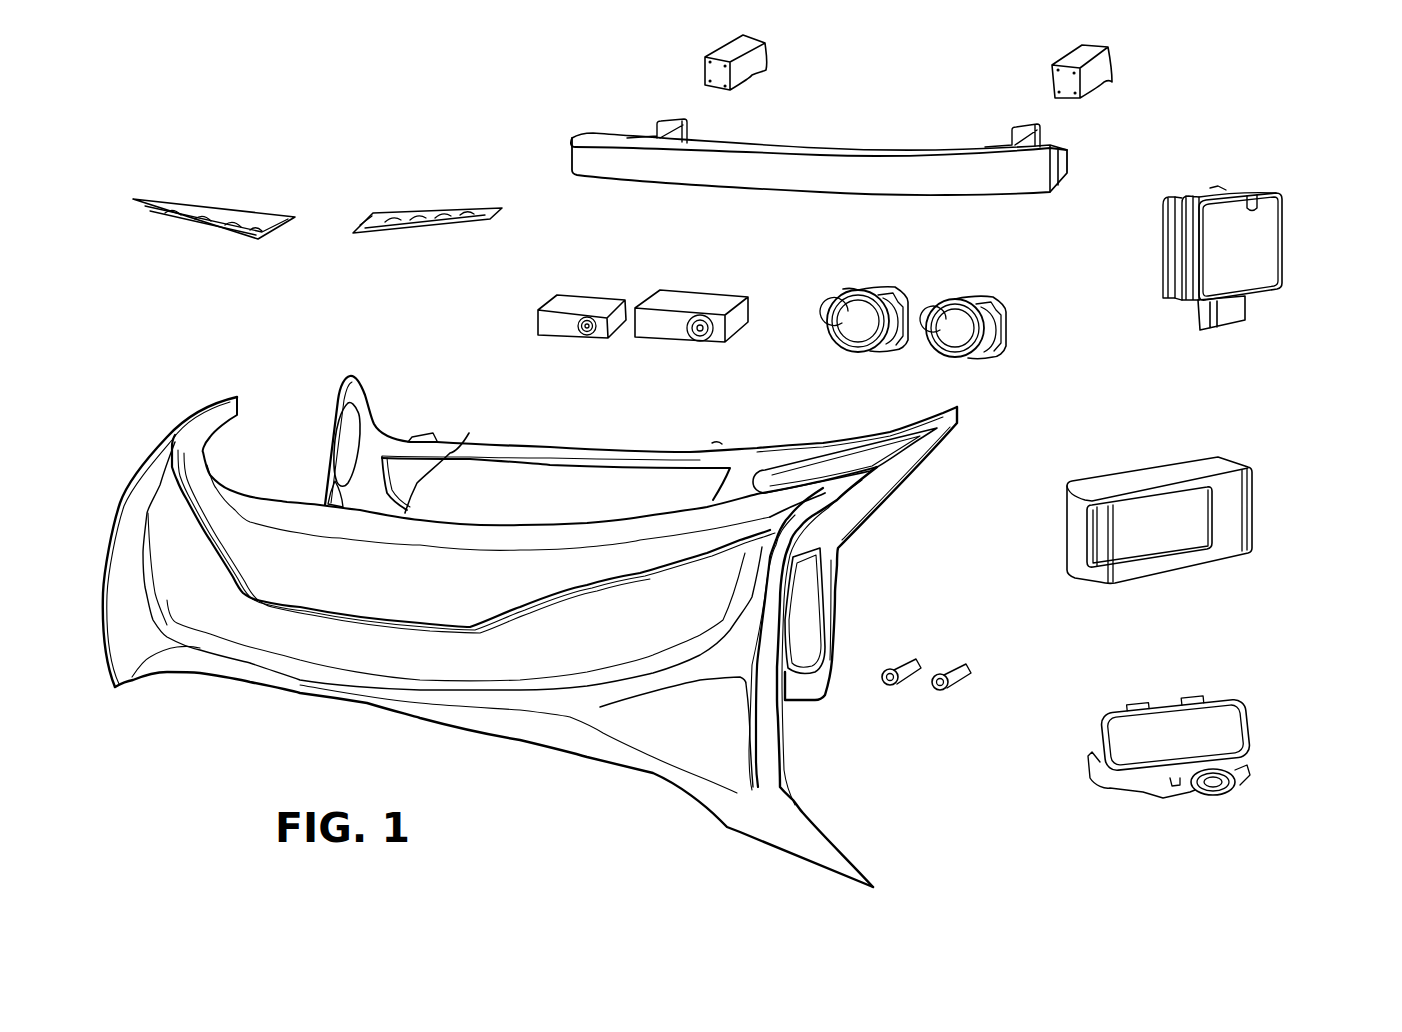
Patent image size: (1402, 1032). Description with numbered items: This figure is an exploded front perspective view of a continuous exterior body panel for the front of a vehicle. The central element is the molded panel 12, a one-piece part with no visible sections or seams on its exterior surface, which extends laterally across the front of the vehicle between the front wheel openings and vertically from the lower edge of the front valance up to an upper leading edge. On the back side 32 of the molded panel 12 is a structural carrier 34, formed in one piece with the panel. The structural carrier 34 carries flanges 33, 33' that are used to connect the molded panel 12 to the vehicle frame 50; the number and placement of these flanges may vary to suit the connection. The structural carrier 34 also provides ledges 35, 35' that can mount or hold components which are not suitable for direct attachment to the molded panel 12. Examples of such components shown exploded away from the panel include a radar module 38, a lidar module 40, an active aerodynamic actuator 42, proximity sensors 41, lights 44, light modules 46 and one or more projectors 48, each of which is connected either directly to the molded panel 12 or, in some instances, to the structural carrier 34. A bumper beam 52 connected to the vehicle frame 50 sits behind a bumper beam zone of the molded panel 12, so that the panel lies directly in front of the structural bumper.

The molded panel 12 is at (767, 835).
The back side 32 is at (810, 757).
The flange 33 is at (641, 430).
The flange 33' is at (811, 411).
The structural carrier 34 is at (866, 508).
The ledge 35 is at (435, 453).
The ledge 35' is at (845, 431).
The radar module 38 is at (1290, 238).
The lidar module 40 is at (1266, 520).
The proximity sensors 41 is at (975, 700).
The active aerodynamic actuator 42 is at (1262, 770).
The lights 44 is at (948, 274).
The light modules 46 is at (430, 182).
The projectors 48 is at (686, 274).
The vehicle frame 50 is at (779, 52).
The bumper beam 52 is at (804, 155).